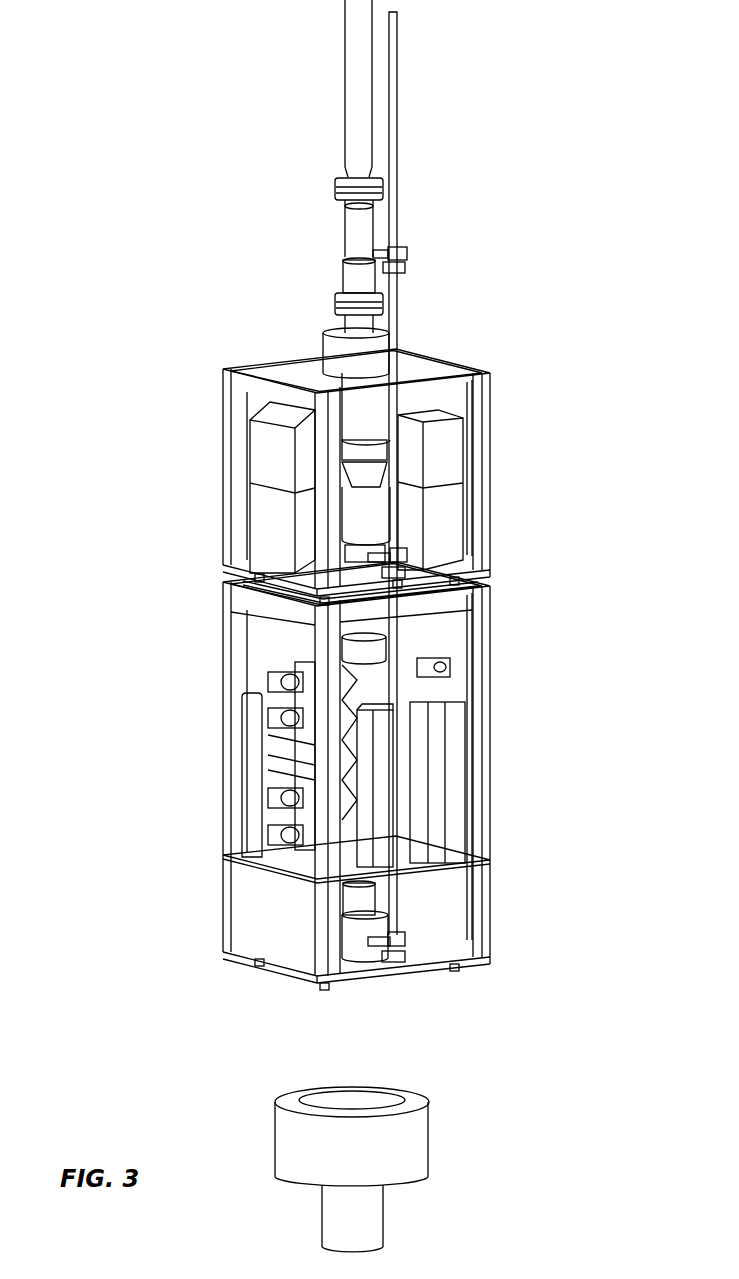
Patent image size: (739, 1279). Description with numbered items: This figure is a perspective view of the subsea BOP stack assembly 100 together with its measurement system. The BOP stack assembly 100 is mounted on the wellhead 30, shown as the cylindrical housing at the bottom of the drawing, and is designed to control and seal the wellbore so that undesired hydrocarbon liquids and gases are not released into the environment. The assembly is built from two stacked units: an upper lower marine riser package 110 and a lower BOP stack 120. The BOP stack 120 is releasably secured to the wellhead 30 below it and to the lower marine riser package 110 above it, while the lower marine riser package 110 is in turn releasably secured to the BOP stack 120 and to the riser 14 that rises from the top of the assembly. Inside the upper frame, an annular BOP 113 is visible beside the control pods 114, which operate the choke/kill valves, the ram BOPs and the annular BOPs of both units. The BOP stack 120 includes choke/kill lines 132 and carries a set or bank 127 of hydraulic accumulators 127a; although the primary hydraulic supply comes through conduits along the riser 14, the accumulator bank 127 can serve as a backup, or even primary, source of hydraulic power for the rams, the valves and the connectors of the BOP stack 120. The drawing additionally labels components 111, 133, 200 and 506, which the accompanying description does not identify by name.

The riser 14 is at (345, 70).
The wellhead 30 is at (417, 1147).
The BOP stack assembly 100 is at (180, 748).
The lower marine riser package 110 is at (490, 452).
The upper gripper 111 is at (357, 418).
The annular BOP 113 is at (375, 522).
The control pods 114 is at (262, 452).
The BOP stack 120 is at (490, 718).
The accumulator bank 127 is at (443, 750).
The hydraulic accumulators 127a is at (363, 852).
The choke/kill lines 132 is at (342, 633).
The guide rod 133 is at (397, 115).
The positioning assembly 200 is at (610, 625).
The lower clamp 506 is at (347, 937).